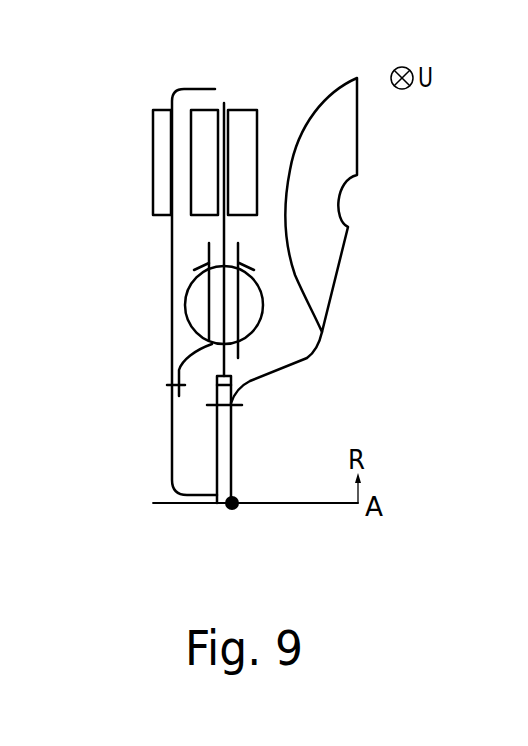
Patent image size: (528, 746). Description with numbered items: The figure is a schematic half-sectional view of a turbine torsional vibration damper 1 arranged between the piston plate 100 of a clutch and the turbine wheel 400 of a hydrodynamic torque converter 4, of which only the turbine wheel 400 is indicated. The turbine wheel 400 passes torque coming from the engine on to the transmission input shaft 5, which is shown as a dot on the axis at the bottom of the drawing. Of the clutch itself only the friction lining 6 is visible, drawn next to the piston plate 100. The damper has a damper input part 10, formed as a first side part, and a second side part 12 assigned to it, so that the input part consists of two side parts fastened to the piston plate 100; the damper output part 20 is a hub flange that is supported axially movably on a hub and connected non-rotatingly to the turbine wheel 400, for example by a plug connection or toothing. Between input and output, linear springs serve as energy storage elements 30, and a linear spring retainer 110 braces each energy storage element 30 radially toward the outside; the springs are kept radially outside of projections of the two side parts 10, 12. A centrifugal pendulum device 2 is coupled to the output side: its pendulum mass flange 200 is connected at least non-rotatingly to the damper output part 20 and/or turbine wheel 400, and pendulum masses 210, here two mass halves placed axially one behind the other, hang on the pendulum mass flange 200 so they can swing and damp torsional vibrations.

The torsional vibration damper 1 is at (190, 438).
The centrifugal pendulum device 2 is at (262, 105).
The hydrodynamic torque converter 4 is at (377, 224).
The transmission input shaft 5 is at (177, 503).
The friction lining 6 is at (160, 162).
The damper input part 10 is at (186, 293).
The second side part 12 is at (240, 356).
The damper output part 20 is at (225, 333).
The energy storage element 30 is at (187, 314).
The piston plate 100 is at (172, 231).
The retainer 110 is at (195, 267).
The pendulum mass flange 200 is at (225, 103).
The pendulum masses 210 is at (241, 125).
The turbine wheel 400 is at (357, 133).